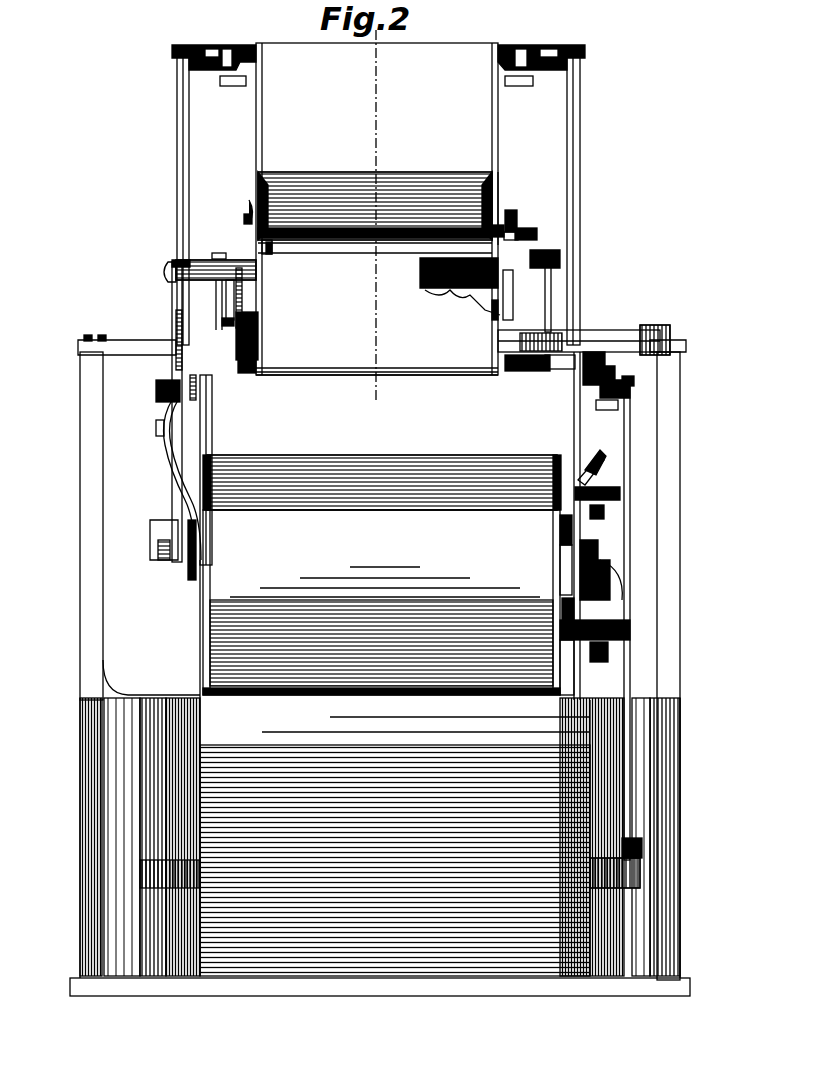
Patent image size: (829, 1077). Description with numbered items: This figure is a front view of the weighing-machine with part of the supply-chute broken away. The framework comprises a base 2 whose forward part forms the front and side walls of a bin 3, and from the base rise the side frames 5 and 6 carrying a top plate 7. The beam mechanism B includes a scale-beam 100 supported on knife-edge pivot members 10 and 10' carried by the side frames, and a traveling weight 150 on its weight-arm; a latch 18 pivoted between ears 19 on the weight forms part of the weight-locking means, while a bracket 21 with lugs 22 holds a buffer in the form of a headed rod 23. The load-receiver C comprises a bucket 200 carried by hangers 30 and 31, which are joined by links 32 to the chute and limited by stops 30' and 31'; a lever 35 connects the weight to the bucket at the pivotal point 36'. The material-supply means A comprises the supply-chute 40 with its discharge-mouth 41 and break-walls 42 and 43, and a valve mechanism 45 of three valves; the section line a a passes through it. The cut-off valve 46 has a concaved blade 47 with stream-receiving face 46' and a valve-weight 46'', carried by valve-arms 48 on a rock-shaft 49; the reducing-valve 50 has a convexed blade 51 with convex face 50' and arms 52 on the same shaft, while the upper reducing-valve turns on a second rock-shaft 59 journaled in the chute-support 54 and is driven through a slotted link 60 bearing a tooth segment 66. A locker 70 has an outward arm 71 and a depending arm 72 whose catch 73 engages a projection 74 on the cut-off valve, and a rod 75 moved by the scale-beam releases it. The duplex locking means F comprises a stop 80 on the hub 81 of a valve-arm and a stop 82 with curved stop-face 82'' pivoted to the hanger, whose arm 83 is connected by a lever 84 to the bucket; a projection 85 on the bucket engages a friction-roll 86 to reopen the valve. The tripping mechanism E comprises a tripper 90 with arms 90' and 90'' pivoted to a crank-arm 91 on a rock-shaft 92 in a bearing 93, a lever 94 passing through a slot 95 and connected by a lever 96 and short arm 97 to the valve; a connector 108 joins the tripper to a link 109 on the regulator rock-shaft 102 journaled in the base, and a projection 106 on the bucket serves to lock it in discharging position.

The base 2 is at (185, 982).
The bin 3 is at (213, 722).
The side frame 5 is at (80, 487).
The side frame 6 is at (668, 517).
The top plate 7 is at (600, 340).
The knife-edge pivot member 10 is at (615, 563).
The knife-edge pivot member 10' is at (147, 539).
The latch 18 is at (600, 462).
The ears 19 is at (588, 480).
The bracket 21 is at (570, 667).
The lugs 22 is at (608, 652).
The headed rod 23 is at (615, 632).
The hanger 30 is at (588, 196).
The stop 30' is at (532, 75).
The hanger 31 is at (169, 196).
The stop 31' is at (230, 95).
The links 32 is at (226, 70).
The lever 35 is at (558, 519).
The pivotal point 36' is at (536, 565).
The supply-chute 40 is at (484, 141).
The discharge-mouth 41 is at (486, 376).
The stream-break wall 42 is at (458, 298).
The stream-break wall 43 is at (500, 185).
The valve mechanism 45 is at (375, 249).
The cut-off valve 46 is at (377, 384).
The concave face 46' is at (275, 358).
The valve-weight 46'' is at (481, 317).
The valve plate 47 is at (258, 348).
The valve-arms 48 is at (243, 300).
The rock-shaft 49 is at (166, 272).
The reducing-valve 50 is at (375, 195).
The convex face 50' is at (524, 209).
The valve plate 51 is at (415, 250).
The valve-arms 52 is at (272, 252).
The chute-support 54 is at (254, 208).
The second rock-shaft 59 is at (246, 218).
The slotted link 60 is at (520, 220).
The tooth segment 66 is at (518, 222).
The locker 70 is at (243, 290).
The extending arm 71 is at (220, 253).
The depending arm 72 is at (240, 312).
The catch 73 is at (244, 322).
The projection 74 is at (222, 322).
The rod 75 is at (218, 408).
The stop 80 is at (172, 294).
The hub 81 is at (176, 262).
The stop 82 is at (127, 351).
The curved stop-face 82'' is at (150, 385).
The projecting arm 83 is at (166, 424).
The lever 84 is at (198, 538).
The projection 85 is at (200, 386).
The friction-roll 86 is at (180, 348).
The tripper 90 is at (641, 381).
The tripper arm 90' is at (607, 415).
The tripper arm 90'' is at (672, 375).
The crank-arm 91 is at (618, 352).
The rock-shaft 92 is at (527, 371).
The bearing 93 is at (565, 372).
The lever 94 is at (552, 306).
The slot 95 is at (556, 335).
The lever 96 is at (560, 252).
The short arm 97 is at (540, 235).
The scale-beam 100 is at (143, 487).
The rock-shaft 102 is at (640, 872).
The projection 106 is at (556, 605).
The connector 108 is at (630, 435).
The link 109 is at (642, 850).
The traveling weight 150 is at (608, 505).
The receptacle 200 is at (198, 643).
The material-supply means A is at (237, 135).
The beam mechanism B is at (610, 526).
The load-receiver C is at (382, 471).
The tripping mechanism E is at (632, 367).
The duplex locking means F is at (201, 300).
The section line a a is at (377, 216).